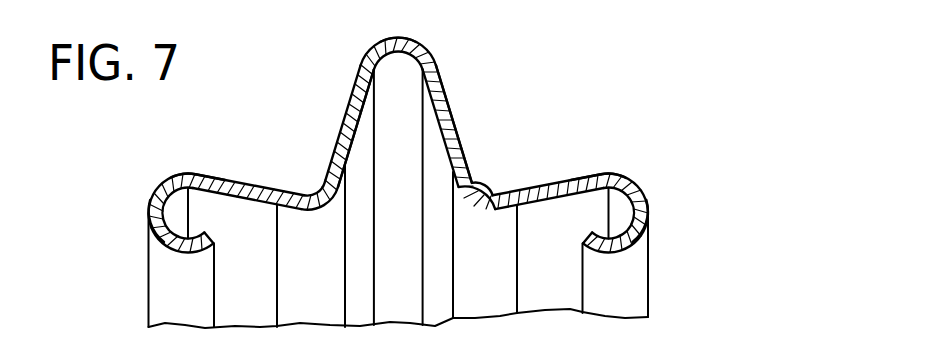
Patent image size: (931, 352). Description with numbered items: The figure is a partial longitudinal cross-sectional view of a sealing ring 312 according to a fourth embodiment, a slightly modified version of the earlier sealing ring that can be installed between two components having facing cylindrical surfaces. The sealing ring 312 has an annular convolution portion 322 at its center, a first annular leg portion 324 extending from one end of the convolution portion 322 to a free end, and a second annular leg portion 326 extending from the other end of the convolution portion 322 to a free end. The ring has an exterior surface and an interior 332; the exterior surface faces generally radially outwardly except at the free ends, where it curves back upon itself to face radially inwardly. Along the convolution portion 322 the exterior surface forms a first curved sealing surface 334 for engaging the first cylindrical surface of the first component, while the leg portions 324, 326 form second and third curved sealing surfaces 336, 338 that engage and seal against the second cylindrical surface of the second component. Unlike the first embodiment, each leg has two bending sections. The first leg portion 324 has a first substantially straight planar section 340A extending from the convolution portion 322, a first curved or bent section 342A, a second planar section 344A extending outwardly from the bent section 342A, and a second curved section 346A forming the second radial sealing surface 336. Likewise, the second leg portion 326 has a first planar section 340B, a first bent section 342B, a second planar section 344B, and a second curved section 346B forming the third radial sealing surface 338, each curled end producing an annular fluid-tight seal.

The sealing ring 312 is at (600, 100).
The annular convolution portion 322 is at (448, 52).
The first annular leg portion 324 is at (356, 154).
The second annular leg portion 326 is at (460, 117).
The interior 332 is at (367, 90).
The first curved sealing surface 334 is at (395, 36).
The second curved sealing surface 336 is at (181, 252).
The third curved sealing surface 338 is at (612, 252).
The first substantially straight planar section 340A is at (334, 152).
The first substantially straight planar section 340B is at (443, 88).
The first curved or bent section 342A is at (300, 194).
The first curved or bent section 342B is at (484, 185).
The second planar section 344A is at (213, 177).
The second planar section 344B is at (595, 175).
The second curved section 346A is at (149, 206).
The second curved section 346B is at (647, 201).